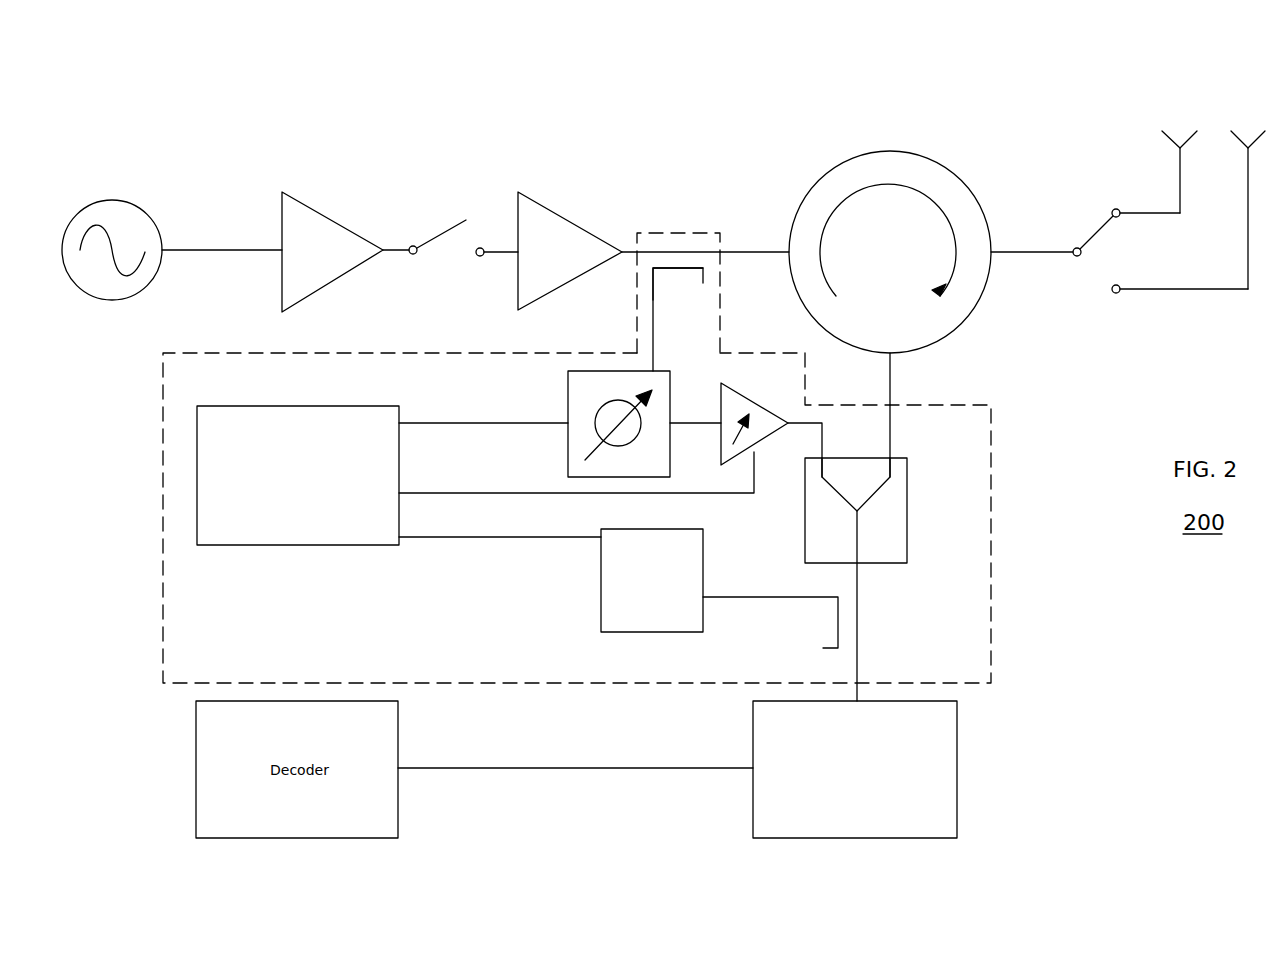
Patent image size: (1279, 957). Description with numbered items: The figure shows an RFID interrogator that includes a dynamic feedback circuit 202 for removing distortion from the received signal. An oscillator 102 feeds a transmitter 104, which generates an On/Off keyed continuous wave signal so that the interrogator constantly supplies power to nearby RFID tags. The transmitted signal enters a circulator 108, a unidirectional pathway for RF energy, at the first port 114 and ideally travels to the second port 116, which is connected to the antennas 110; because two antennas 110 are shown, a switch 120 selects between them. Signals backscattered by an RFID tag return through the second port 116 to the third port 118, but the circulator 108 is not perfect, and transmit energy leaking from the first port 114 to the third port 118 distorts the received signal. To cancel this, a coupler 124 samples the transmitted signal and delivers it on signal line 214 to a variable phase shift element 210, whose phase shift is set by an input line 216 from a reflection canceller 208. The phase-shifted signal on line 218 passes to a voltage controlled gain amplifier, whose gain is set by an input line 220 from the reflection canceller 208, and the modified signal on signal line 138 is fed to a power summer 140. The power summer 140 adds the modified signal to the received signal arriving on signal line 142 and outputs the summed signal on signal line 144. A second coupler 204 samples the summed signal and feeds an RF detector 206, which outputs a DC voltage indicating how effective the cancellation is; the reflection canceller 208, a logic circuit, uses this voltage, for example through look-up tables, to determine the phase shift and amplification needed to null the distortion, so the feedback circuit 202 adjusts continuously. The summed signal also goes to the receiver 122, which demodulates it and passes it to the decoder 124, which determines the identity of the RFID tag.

The oscillator 102 is at (112, 200).
The transmitter 104 is at (503, 132).
The circulator 108 is at (888, 150).
The antenna 110 is at (1248, 132).
The port 1 114 is at (755, 214).
The port 2 116 is at (1003, 218).
The port 3 118 is at (958, 372).
The switch 120 is at (1094, 268).
The receiver 122 is at (958, 733).
The coupler 124 is at (668, 270).
The signal line 138 is at (740, 383).
The power summer 140 is at (805, 527).
The signal line 142 is at (892, 440).
The signal line 144 is at (858, 578).
The dynamic feedback circuit 202 is at (162, 478).
The second coupler 204 is at (837, 617).
The RF detector 206 is at (601, 594).
The reflection canceller 208 is at (247, 547).
The variable phase shift element 210 is at (566, 400).
The signal line 214 is at (655, 330).
The input line 216 is at (432, 425).
The line 218 is at (688, 425).
The input line 220 is at (500, 495).